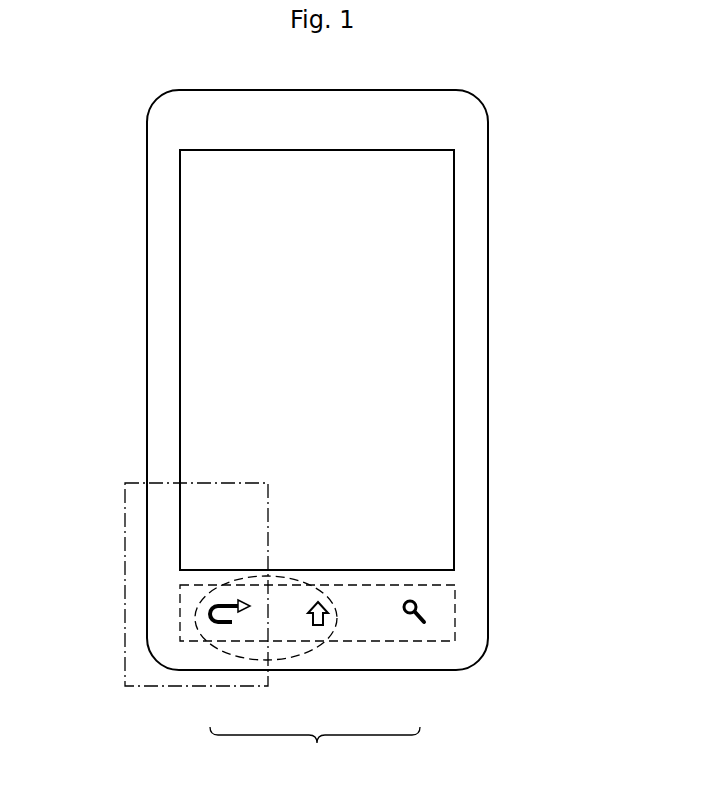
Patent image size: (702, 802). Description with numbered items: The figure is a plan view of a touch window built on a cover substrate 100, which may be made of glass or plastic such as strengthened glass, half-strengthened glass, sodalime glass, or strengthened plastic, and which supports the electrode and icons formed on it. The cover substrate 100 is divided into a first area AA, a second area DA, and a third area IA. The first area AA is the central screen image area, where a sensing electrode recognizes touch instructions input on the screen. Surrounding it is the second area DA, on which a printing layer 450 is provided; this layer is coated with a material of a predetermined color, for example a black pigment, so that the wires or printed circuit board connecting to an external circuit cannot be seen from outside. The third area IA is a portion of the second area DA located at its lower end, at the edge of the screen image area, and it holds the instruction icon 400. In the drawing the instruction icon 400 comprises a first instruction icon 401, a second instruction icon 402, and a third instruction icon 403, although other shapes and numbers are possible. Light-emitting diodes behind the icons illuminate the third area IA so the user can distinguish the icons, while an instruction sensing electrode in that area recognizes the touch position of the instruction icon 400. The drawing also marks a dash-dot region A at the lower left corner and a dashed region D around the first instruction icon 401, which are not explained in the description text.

The cover substrate 100 is at (437, 234).
The printing layer 450 is at (480, 357).
The instruction icon 400 is at (315, 751).
The first instruction icon 401 is at (225, 626).
The second instruction icon 402 is at (318, 626).
The third instruction icon 403 is at (409, 616).
The second area DA is at (315, 123).
The first area AA is at (318, 346).
The third area IA is at (455, 612).
The region A is at (125, 556).
The region D is at (195, 614).